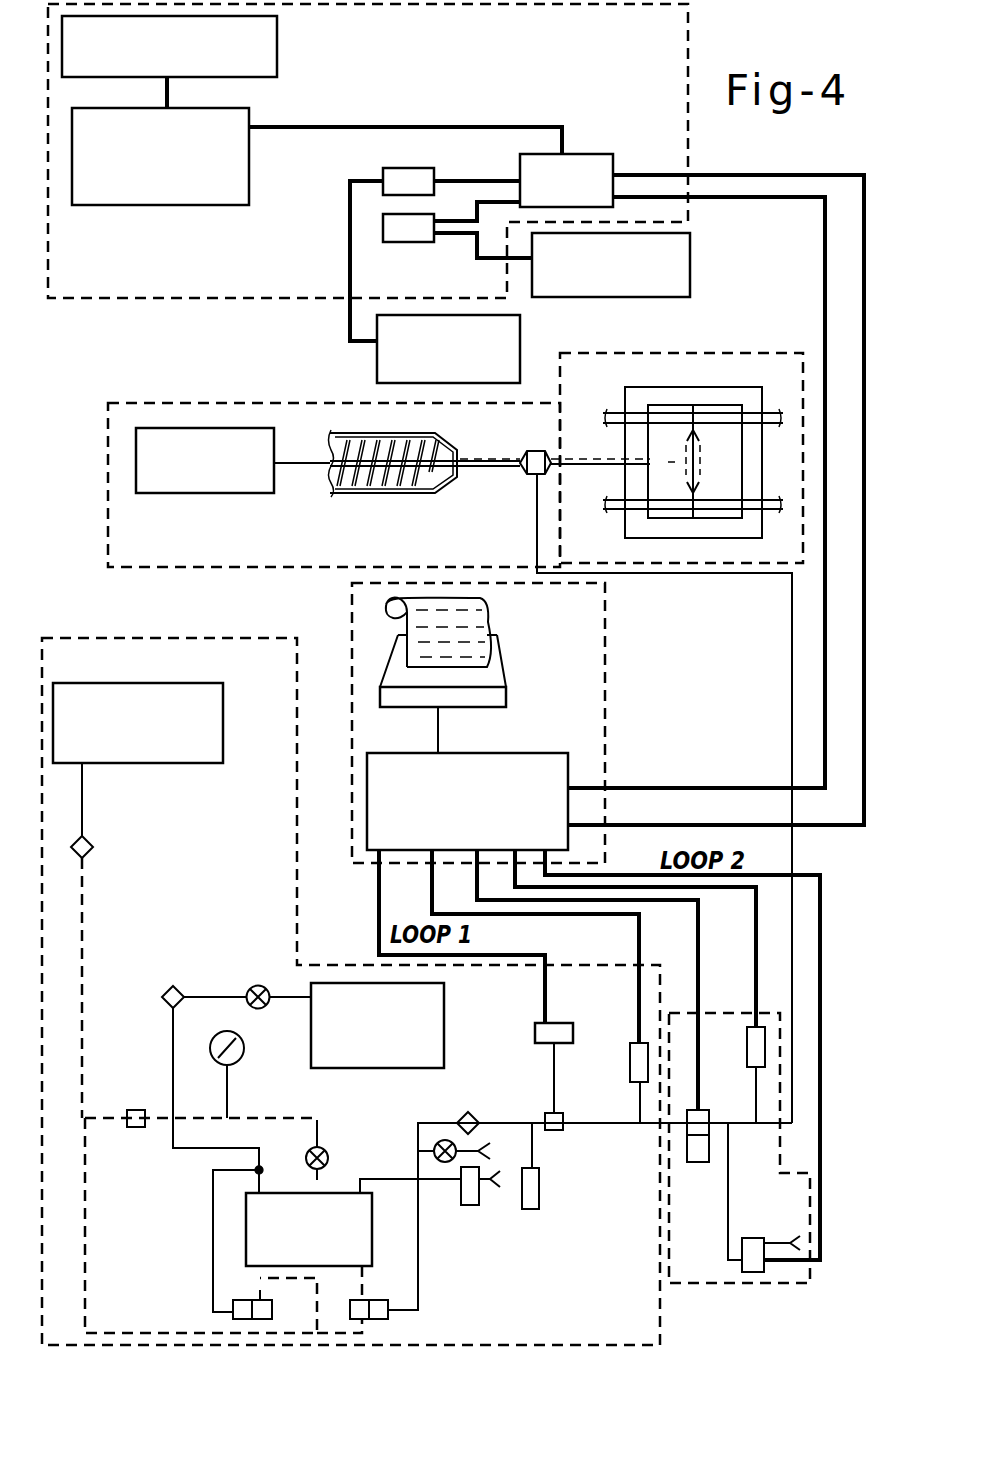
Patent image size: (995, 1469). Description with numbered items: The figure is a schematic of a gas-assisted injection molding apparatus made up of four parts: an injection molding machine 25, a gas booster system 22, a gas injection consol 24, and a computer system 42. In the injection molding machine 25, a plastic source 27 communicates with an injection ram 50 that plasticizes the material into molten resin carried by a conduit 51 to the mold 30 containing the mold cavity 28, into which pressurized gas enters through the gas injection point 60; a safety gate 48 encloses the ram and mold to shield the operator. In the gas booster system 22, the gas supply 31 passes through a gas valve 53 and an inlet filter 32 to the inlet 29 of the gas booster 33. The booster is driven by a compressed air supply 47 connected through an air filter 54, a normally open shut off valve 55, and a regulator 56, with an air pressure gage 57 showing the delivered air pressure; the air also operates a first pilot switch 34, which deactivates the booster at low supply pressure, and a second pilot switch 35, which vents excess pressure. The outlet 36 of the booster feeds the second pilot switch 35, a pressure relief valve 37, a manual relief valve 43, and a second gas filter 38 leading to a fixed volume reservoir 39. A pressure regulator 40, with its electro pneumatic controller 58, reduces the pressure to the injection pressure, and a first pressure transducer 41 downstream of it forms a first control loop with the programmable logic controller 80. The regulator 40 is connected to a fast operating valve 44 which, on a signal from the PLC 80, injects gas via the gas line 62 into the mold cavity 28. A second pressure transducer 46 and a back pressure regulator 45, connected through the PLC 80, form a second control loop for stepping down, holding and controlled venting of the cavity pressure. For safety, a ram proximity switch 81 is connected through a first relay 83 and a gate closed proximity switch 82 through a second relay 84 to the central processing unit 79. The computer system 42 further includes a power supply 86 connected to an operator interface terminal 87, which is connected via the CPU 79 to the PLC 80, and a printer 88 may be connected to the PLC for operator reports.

The gas booster system 22 is at (655, 1345).
The gas injection consol 24 is at (718, 1283).
The injection molding machine 25 is at (108, 468).
The plastic source 27 is at (178, 493).
The mold cavity 28 is at (703, 460).
The inlet 29 is at (265, 1193).
The mold 30 is at (665, 530).
The gas supply 31 is at (455, 995).
The inlet filter 32 is at (167, 990).
The gas booster 33 is at (367, 1238).
The first pilot switch 34 is at (233, 1315).
The second pilot switch 35 is at (380, 1322).
The outlet 36 is at (360, 1179).
The pressure relief valve 37 is at (470, 1205).
The second gas filter 38 is at (460, 1115).
The fixed volume reservoir 39 is at (540, 1188).
The pressure regulator 40 is at (556, 1130).
The first pressure transducer 41 is at (630, 1050).
The computer system 42 is at (153, 300).
The manual relief valve 43 is at (457, 1143).
The fast operating valve 44 is at (700, 1150).
The back pressure regulator 45 is at (752, 1238).
The second pressure transducer 46 is at (753, 1045).
The compressed air supply 47 is at (168, 763).
The safety gate 48 is at (722, 520).
The injection ram 50 is at (378, 486).
The conduit 51 is at (478, 468).
The gas valve 53 is at (254, 986).
The air filter 54 is at (93, 838).
The shut off valve 55 is at (326, 1149).
The regulator 56 is at (137, 1110).
The air pressure gage 57 is at (245, 1048).
The electro pneumatic controller 58 is at (535, 1033).
The gas injection point 60 is at (545, 474).
The gas line 62 is at (795, 843).
The central processing unit 79 is at (598, 154).
The programmable logic controller 80 is at (485, 753).
The ram proximity switch 81 is at (377, 355).
The gate closed proximity switch 82 is at (690, 272).
The first relay 83 is at (400, 168).
The second relay 84 is at (396, 242).
The power supply 86 is at (280, 60).
The operator interface terminal 87 is at (222, 205).
The printer 88 is at (505, 667).